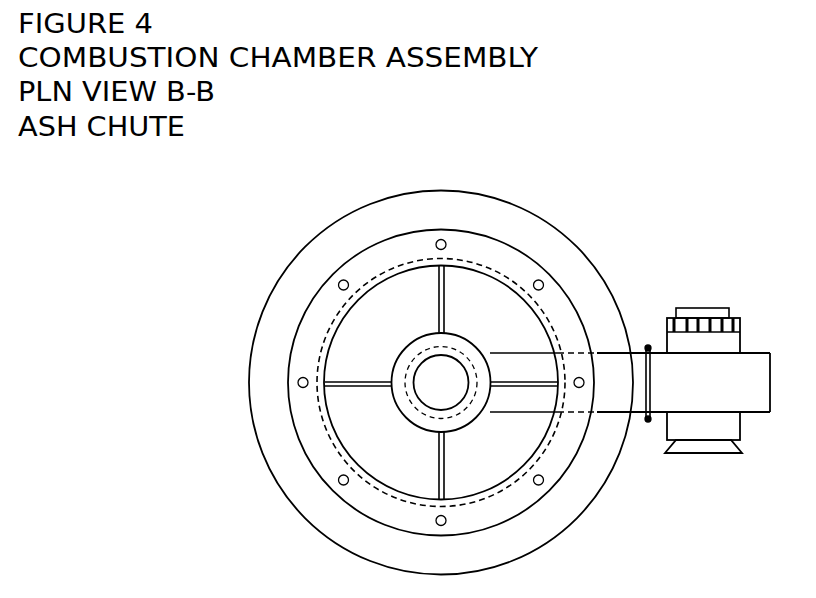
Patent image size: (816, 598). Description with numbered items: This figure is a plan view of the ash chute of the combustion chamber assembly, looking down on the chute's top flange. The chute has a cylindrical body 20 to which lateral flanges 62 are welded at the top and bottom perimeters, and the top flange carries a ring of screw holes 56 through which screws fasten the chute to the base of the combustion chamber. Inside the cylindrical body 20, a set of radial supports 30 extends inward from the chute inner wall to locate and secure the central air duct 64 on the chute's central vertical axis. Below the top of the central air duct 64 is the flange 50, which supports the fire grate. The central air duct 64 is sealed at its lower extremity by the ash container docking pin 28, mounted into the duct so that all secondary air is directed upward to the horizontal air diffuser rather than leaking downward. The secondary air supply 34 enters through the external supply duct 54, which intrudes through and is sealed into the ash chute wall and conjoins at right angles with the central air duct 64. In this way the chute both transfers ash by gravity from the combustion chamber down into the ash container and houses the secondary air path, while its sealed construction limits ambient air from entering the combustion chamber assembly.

The cylindrical body 20 is at (335, 438).
The ash container docking pin 28 is at (436, 391).
The radial supports 30 is at (437, 300).
The secondary air supply 34 is at (703, 455).
The flange 50 is at (413, 352).
The supply duct 54 is at (514, 413).
The screw holes 56 is at (338, 286).
The lateral flanges 62 is at (320, 457).
The central air duct 64 is at (400, 395).